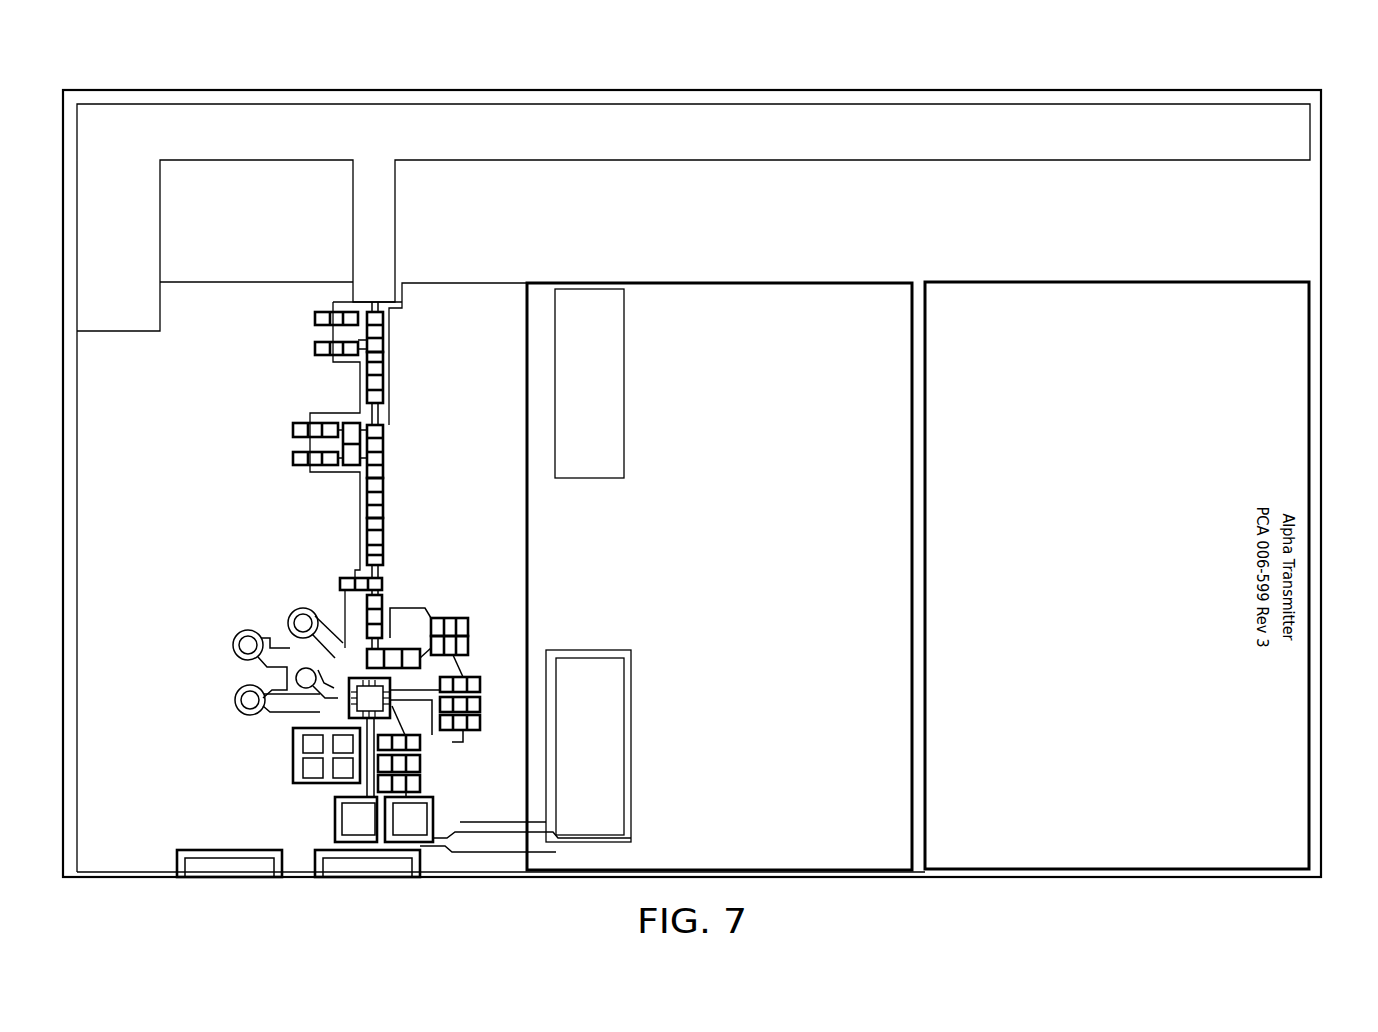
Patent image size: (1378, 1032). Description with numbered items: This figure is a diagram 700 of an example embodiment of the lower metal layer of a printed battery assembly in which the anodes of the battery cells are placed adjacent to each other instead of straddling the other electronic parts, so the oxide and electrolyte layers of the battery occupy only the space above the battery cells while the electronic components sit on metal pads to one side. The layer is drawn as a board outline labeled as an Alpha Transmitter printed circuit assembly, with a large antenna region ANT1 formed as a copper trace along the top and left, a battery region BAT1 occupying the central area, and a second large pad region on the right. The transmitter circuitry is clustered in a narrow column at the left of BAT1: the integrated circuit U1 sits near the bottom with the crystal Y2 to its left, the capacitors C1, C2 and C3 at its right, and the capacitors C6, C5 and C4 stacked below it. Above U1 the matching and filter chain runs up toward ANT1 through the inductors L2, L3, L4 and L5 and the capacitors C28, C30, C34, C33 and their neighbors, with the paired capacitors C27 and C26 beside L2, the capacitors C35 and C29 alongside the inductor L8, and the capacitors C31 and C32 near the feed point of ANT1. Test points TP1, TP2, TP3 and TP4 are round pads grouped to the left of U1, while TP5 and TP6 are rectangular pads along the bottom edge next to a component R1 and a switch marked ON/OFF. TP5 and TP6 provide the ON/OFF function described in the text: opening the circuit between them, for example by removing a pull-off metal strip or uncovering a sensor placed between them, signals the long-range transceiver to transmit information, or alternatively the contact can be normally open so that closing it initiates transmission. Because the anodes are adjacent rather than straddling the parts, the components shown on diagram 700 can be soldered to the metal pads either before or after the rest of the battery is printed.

The diagram 700 is at (1203, 74).
The antenna ANT1 is at (693, 488).
The battery BAT1 is at (719, 576).
The transmitter integrated circuit U1 is at (356, 698).
The crystal Y2 is at (313, 755).
The resistor / on-off switch R1 is at (415, 824).
The inductor L2 is at (377, 660).
The inductor L3 is at (386, 616).
The inductor L4 is at (356, 498).
The inductor L5 is at (393, 332).
The inductor L8 is at (294, 444).
The capacitor C1 is at (476, 682).
The capacitor C2 is at (476, 703).
The capacitor C3 is at (476, 724).
The capacitor C4 is at (414, 785).
The capacitor C5 is at (414, 763).
The capacitor C6 is at (414, 743).
The capacitor C26 is at (471, 646).
The capacitor C27 is at (471, 623).
The capacitor C28 is at (379, 585).
The capacitor C29 is at (299, 461).
The capacitor C30 is at (392, 541).
The capacitor C31 is at (316, 347).
The capacitor C32 is at (316, 320).
The capacitor C33 is at (355, 378).
The capacitor C34 is at (387, 451).
The capacitor C35 is at (299, 432).
The test point TP1 is at (277, 720).
The test point TP2 is at (313, 671).
The test point TP3 is at (261, 651).
The test point TP4 is at (315, 621).
The test point TP5 is at (209, 859).
The test point TP6 is at (388, 863).